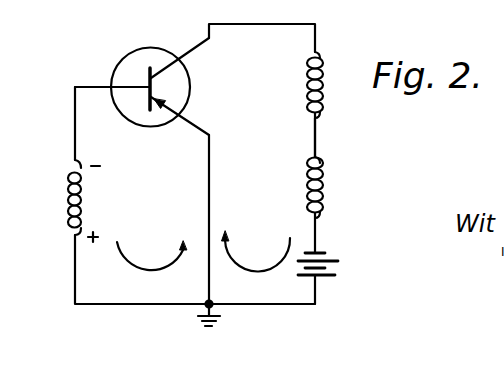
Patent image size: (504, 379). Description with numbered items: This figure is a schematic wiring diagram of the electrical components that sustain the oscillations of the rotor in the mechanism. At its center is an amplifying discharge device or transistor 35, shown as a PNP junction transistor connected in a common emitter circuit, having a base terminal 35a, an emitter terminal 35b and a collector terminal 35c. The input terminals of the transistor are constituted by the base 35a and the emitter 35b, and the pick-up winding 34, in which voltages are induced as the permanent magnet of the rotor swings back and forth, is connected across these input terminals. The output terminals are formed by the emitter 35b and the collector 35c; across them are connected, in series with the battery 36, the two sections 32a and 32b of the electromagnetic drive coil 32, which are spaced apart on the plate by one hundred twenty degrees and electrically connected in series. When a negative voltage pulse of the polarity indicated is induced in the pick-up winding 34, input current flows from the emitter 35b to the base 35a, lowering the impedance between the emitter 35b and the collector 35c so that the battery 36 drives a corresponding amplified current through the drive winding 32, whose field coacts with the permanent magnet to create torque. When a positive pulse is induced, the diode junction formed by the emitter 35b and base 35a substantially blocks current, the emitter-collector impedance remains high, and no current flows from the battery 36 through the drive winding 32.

The electromagnetic drive coil 32 is at (348, 135).
The drive winding section 32a is at (320, 114).
The drive winding section 32b is at (323, 189).
The pick-up winding 34 is at (72, 174).
The transistor 35 is at (138, 47).
The base terminal 35a is at (143, 101).
The emitter terminal 35b is at (163, 108).
The collector terminal 35c is at (168, 70).
The battery 36 is at (328, 257).